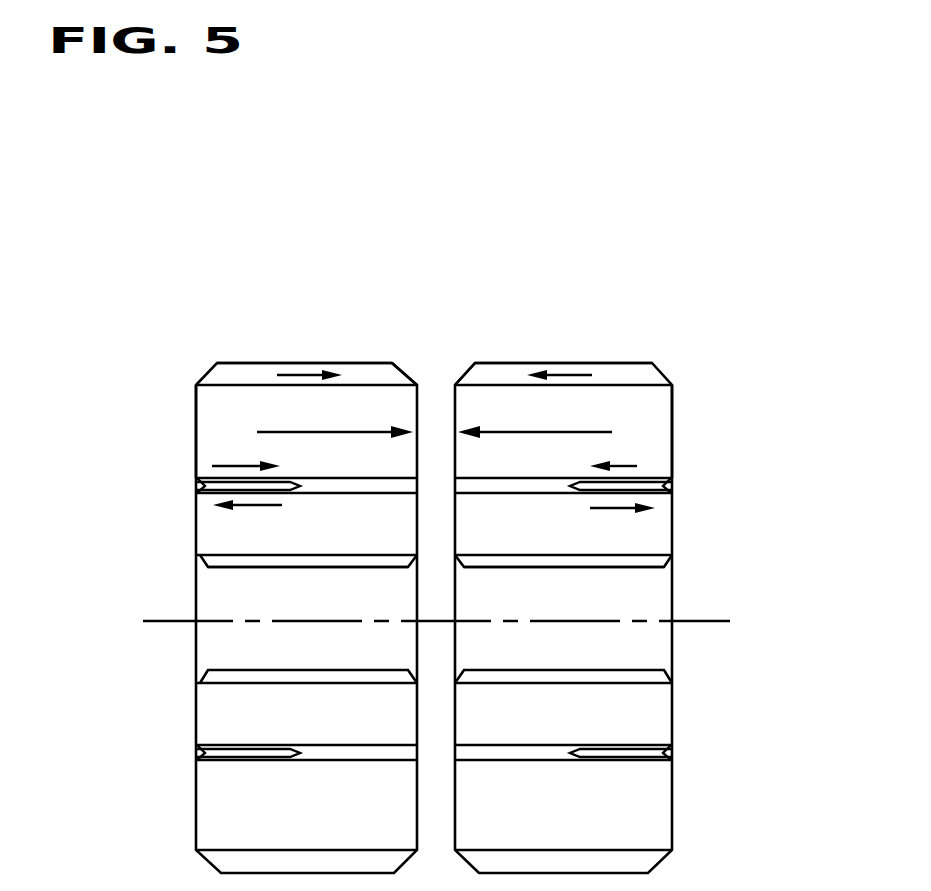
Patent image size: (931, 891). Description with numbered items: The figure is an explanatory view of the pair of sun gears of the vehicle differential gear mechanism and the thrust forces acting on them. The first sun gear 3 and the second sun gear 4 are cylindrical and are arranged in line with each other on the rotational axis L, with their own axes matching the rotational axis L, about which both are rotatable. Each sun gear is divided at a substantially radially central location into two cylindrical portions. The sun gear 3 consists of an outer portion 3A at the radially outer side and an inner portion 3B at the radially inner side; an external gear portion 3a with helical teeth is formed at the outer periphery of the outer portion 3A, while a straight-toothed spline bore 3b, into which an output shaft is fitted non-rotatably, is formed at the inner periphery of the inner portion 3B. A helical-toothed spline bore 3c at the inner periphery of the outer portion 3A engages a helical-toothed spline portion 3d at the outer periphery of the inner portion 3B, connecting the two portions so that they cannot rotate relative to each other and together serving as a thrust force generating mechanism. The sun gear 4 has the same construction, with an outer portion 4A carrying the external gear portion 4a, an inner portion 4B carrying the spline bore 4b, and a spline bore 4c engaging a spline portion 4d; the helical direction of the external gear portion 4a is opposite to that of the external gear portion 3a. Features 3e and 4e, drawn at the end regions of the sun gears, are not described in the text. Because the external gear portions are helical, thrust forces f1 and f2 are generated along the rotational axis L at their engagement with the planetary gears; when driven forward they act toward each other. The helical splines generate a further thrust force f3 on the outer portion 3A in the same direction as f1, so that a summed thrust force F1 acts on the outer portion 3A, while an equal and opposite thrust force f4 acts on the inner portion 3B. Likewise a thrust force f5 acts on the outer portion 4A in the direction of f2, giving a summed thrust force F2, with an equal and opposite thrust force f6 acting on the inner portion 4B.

The sun gear 3 is at (194, 371).
The outer portion 3A is at (188, 429).
The inner portion 3B is at (186, 533).
The external gear portion 3a is at (251, 363).
The spline bore 3b is at (256, 567).
The spline bore 3c is at (213, 487).
The spline portion 3d is at (215, 478).
The first roller chamfer 3e is at (421, 392).
The sun gear 4 is at (667, 366).
The outer portion 4A is at (684, 414).
The inner portion 4B is at (684, 538).
The external gear portion 4a is at (530, 363).
The spline bore 4b is at (612, 567).
The spline bore 4c is at (655, 488).
The spline portion 4d is at (655, 478).
The second roller chamfer 4e is at (455, 392).
The rotational axis L is at (163, 625).
The thrust force F1 is at (335, 415).
The thrust force F2 is at (535, 415).
The thrust force f1 is at (309, 353).
The thrust force f2 is at (559, 353).
The thrust force f3 is at (246, 449).
The thrust force f4 is at (247, 525).
The thrust force f5 is at (625, 449).
The thrust force f6 is at (625, 527).